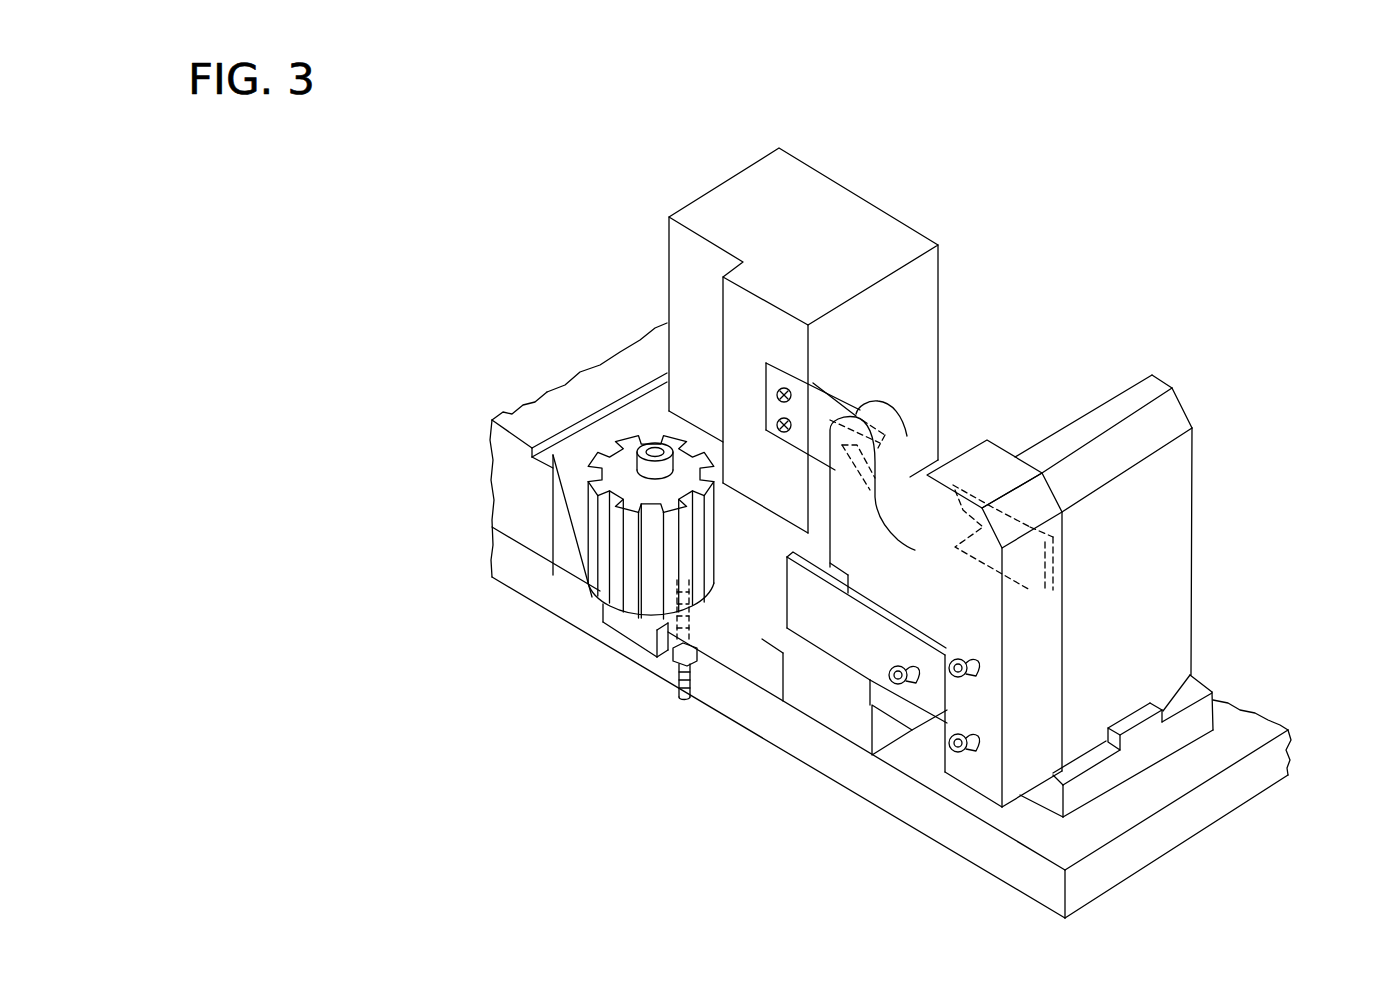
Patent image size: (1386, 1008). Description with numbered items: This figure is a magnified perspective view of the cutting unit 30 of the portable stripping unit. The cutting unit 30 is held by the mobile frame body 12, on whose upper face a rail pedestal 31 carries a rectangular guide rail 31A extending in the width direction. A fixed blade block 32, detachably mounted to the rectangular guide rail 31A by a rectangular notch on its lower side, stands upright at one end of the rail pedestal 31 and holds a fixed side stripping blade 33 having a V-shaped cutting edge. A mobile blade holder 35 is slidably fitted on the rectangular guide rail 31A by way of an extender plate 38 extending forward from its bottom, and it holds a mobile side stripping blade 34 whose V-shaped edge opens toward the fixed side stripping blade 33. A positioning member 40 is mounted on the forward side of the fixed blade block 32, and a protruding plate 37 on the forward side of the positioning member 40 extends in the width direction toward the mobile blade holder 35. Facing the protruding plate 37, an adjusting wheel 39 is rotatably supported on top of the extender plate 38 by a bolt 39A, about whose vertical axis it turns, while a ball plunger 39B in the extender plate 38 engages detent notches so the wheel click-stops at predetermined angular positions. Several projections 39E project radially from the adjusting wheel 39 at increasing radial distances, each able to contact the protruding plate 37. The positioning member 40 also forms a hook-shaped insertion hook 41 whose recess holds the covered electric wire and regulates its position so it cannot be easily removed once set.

The mobile frame body 12 is at (1248, 722).
The cutting unit 30 is at (1222, 468).
The rail pedestal 31 is at (1187, 727).
The rectangular guide rail 31A is at (1133, 717).
The fixed blade block 32 is at (1172, 550).
The fixed side stripping blade 33 is at (1005, 500).
The mobile side stripping blade 34 is at (860, 398).
The mobile blade holder 35 is at (845, 217).
The protruding plate 37 is at (847, 628).
The extender plate 38 is at (640, 642).
The adjusting wheel 39 is at (604, 440).
The bolt 39A is at (655, 472).
The ball plunger 39B is at (695, 585).
The projections 39E is at (615, 512).
The positioning member 40 is at (1076, 621).
The insertion hook 41 is at (917, 548).